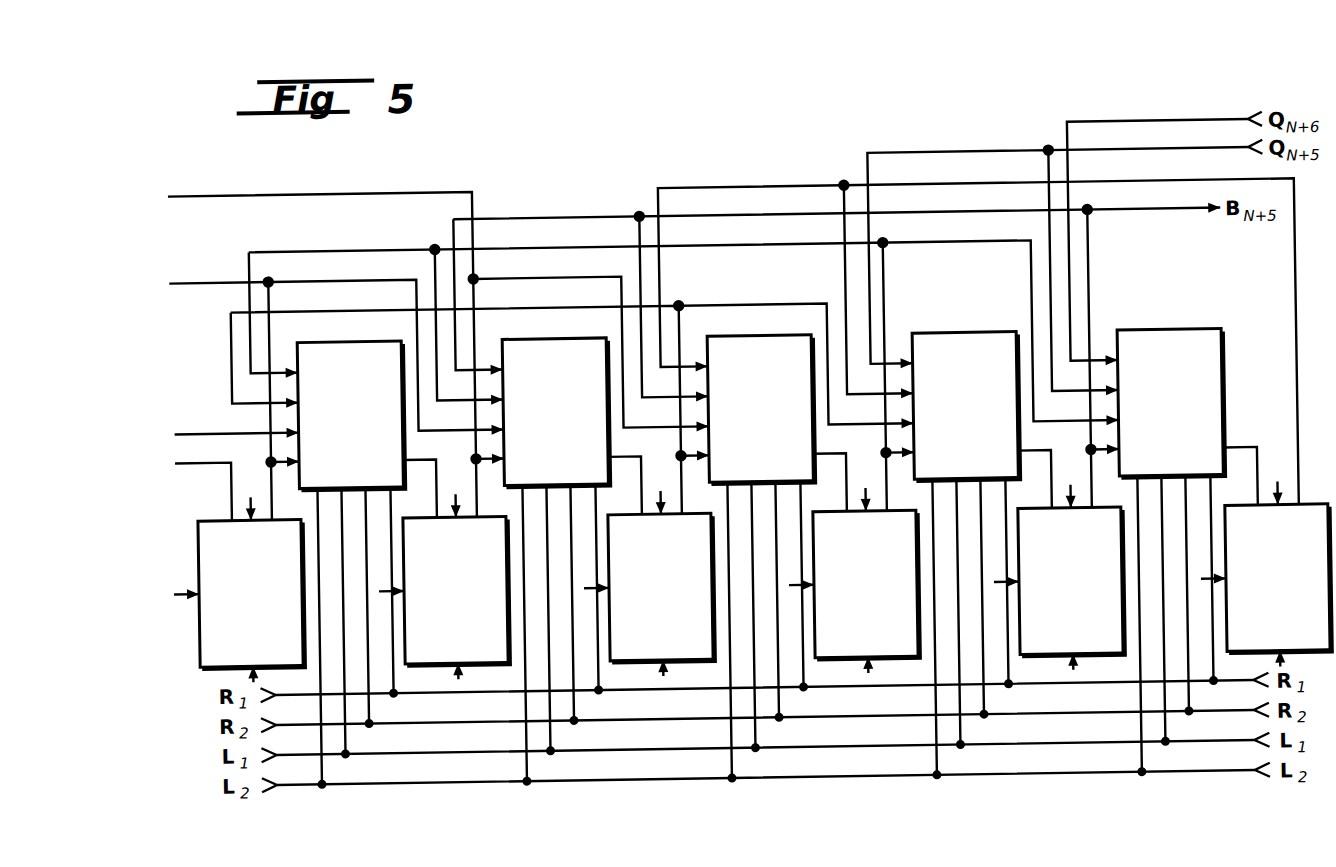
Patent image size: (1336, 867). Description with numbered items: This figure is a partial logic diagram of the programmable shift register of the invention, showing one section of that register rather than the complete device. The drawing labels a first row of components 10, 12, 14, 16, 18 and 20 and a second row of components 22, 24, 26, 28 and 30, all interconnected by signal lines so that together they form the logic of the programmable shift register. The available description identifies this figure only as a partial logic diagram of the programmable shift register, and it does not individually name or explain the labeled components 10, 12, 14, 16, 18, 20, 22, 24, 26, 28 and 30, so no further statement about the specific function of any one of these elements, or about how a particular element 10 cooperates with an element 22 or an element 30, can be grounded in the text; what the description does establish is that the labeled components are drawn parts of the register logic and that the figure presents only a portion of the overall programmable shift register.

The flip-flop N-1 10 is at (229, 518).
The flip-flop N 12 is at (434, 518).
The flip-flop N+1 14 is at (639, 518).
The flip-flop N+2 16 is at (844, 518).
The flip-flop N+3 18 is at (1049, 518).
The flip-flop N+4 20 is at (1259, 516).
The multiplexer N 22 is at (387, 336).
The multiplexer N+1 24 is at (592, 336).
The multiplexer N+2 26 is at (797, 336).
The multiplexer N+3 28 is at (1002, 336).
The multiplexer N+4 30 is at (1209, 337).